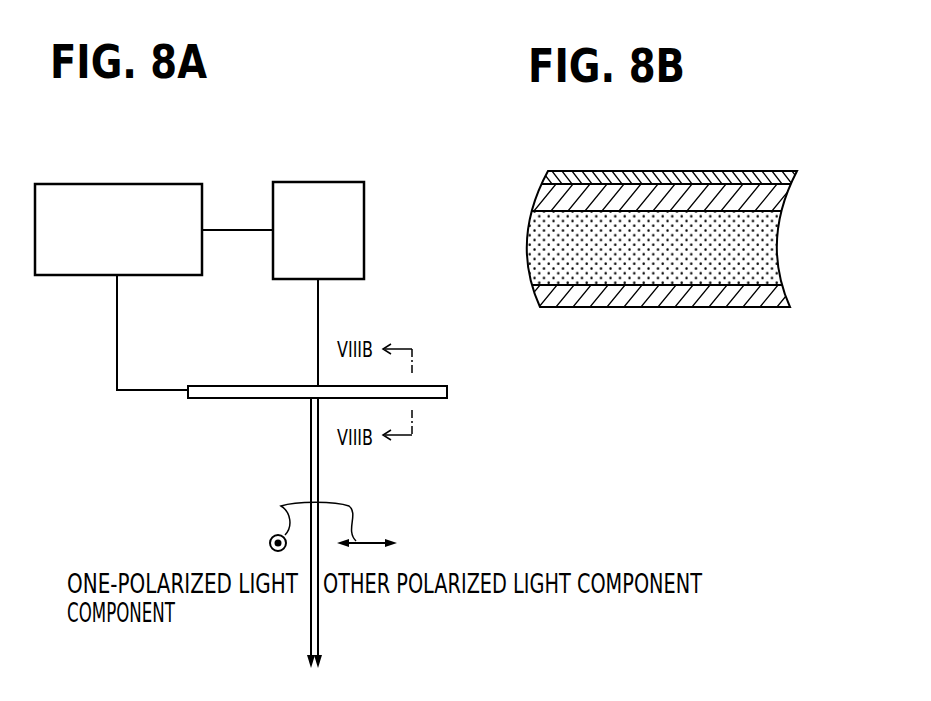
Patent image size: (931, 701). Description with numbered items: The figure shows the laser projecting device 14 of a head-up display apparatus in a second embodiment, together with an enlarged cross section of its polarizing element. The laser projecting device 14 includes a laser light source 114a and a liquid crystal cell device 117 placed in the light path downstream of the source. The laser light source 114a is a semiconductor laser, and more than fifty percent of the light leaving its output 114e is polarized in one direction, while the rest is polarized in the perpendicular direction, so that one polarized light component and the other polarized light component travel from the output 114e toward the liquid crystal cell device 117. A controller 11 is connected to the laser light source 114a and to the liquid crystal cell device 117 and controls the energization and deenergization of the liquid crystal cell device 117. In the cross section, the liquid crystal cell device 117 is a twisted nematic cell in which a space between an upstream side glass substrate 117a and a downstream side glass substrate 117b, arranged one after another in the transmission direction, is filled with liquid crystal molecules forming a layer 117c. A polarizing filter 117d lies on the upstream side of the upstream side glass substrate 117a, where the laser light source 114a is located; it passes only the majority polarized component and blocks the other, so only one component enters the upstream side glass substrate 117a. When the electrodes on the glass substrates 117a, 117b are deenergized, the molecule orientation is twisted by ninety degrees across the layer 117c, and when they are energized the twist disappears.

In FIG. 8A, the controller 11 is at (128, 183).
In FIG. 8A, the laser light source 114a is at (314, 182).
In FIG. 8A, the laser projecting device 14 is at (416, 245).
In FIG. 8A, the output of the laser light source 114e is at (318, 280).
In FIG. 8A, the liquid crystal cell device 117 is at (447, 392).
In FIG. 8B, the liquid crystal cell device 117 is at (712, 156).
In FIG. 8B, the polarizing filter 117d is at (748, 172).
In FIG. 8B, the upstream side glass substrate 117a is at (773, 201).
In FIG. 8B, the layer of liquid crystal molecules 117c is at (768, 248).
In FIG. 8B, the downstream side glass substrate 117b is at (770, 297).